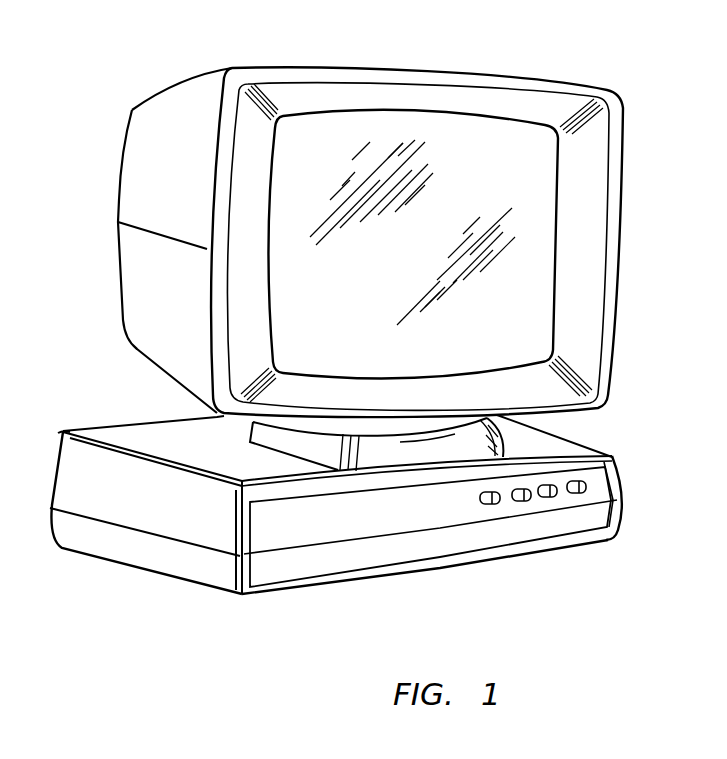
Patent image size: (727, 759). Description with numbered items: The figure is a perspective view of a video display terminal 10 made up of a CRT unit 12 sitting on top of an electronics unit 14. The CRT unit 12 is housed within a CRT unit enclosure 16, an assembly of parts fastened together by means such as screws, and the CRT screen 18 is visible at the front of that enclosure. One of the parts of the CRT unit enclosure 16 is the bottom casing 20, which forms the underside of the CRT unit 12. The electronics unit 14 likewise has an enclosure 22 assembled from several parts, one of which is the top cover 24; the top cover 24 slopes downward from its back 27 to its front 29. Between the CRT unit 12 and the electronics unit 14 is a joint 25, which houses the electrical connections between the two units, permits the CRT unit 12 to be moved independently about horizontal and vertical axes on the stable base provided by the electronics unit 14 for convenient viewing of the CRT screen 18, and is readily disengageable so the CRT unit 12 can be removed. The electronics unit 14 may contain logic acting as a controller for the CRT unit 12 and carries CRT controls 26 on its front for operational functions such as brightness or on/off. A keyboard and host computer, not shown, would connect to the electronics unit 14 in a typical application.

The video display terminal 10 is at (244, 58).
The CRT unit 12 is at (117, 188).
The electronics unit 14 is at (67, 422).
The CRT unit enclosure 16 is at (131, 112).
The CRT screen 18 is at (545, 223).
The bottom casing 20 is at (121, 298).
The enclosure 22 is at (153, 576).
The top cover 24 is at (151, 418).
The joint 25 is at (246, 428).
The CRT controls 26 is at (491, 504).
The back 27 is at (60, 434).
The front 29 is at (277, 487).